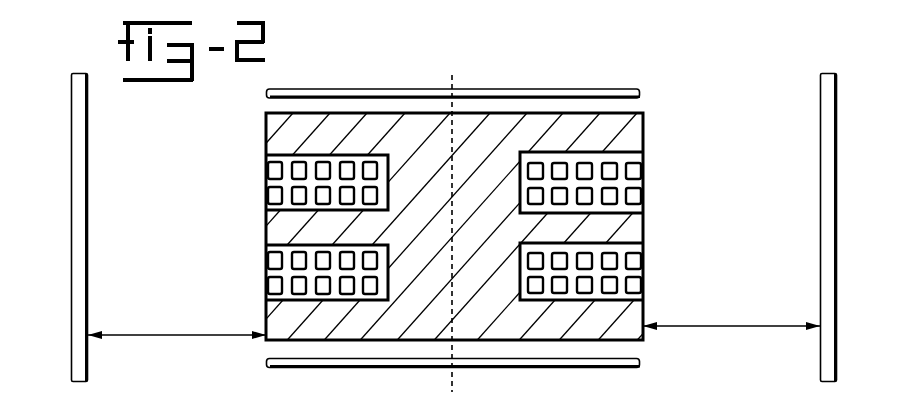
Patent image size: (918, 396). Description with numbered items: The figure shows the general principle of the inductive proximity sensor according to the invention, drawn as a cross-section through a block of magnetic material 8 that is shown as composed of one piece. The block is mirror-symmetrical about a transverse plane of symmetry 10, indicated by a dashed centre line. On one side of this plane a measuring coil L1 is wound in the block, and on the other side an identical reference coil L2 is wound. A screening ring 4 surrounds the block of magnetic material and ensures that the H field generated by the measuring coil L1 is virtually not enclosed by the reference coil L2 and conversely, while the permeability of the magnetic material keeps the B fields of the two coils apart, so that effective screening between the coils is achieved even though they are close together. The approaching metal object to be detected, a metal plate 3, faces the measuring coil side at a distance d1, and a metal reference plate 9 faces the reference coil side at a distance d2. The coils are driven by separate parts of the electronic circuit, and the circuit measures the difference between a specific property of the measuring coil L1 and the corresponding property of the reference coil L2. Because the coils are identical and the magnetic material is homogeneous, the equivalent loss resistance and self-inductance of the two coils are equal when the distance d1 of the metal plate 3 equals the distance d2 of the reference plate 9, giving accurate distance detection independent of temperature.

The metal plate 3 is at (88, 242).
The screening ring 4 is at (641, 94).
The block of magnetic material 8 is at (266, 136).
The metal reference plate 9 is at (822, 255).
The transverse plane of symmetry 10 is at (452, 382).
The measuring coil L1 is at (249, 202).
The reference coil L2 is at (656, 195).
The distance of the metal plate d1 is at (177, 325).
The distance of the reference plate d2 is at (731, 316).